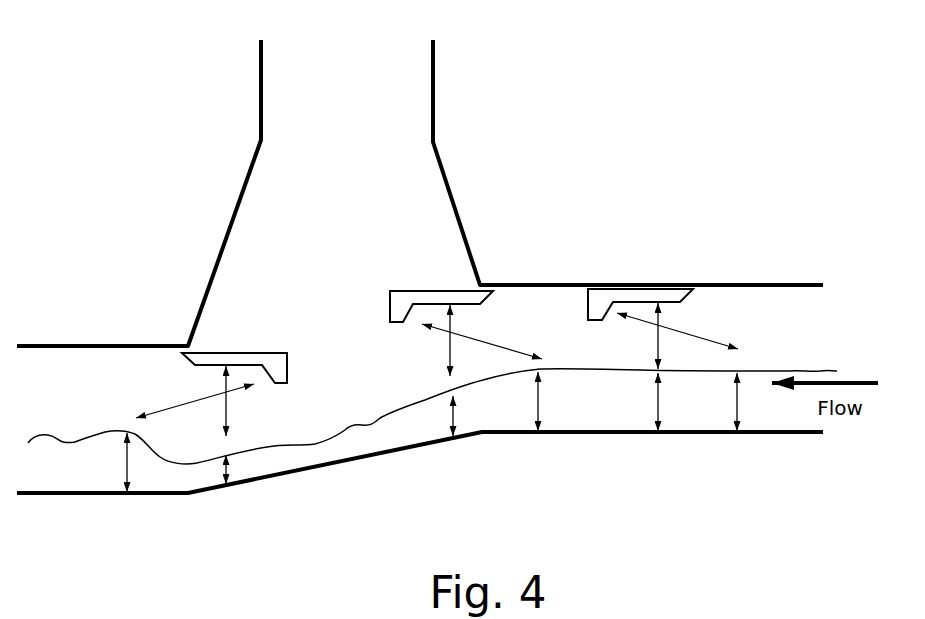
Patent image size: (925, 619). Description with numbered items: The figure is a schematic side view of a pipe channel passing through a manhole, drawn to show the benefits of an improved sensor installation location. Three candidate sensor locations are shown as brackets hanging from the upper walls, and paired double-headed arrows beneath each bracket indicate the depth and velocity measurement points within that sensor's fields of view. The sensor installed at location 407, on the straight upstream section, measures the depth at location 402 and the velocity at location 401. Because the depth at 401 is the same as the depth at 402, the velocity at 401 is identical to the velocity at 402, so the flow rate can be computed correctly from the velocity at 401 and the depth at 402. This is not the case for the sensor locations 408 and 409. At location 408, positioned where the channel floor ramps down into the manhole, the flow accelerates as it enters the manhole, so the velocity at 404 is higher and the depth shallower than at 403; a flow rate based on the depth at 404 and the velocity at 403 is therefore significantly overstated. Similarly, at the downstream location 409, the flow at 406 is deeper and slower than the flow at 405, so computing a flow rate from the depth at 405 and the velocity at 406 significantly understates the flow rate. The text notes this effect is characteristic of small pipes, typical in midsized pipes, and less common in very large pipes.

The velocity location 401 is at (735, 400).
The depth location 402 is at (652, 400).
The velocity location for sensor 408 403 is at (532, 405).
The depth location for sensor 408 404 is at (445, 418).
The depth location for sensor 409 405 is at (220, 470).
The velocity location for sensor 409 406 is at (122, 470).
The improved sensor installation location 407 is at (652, 278).
The sensor installation location 408 is at (445, 287).
The sensor installation location 409 is at (238, 348).